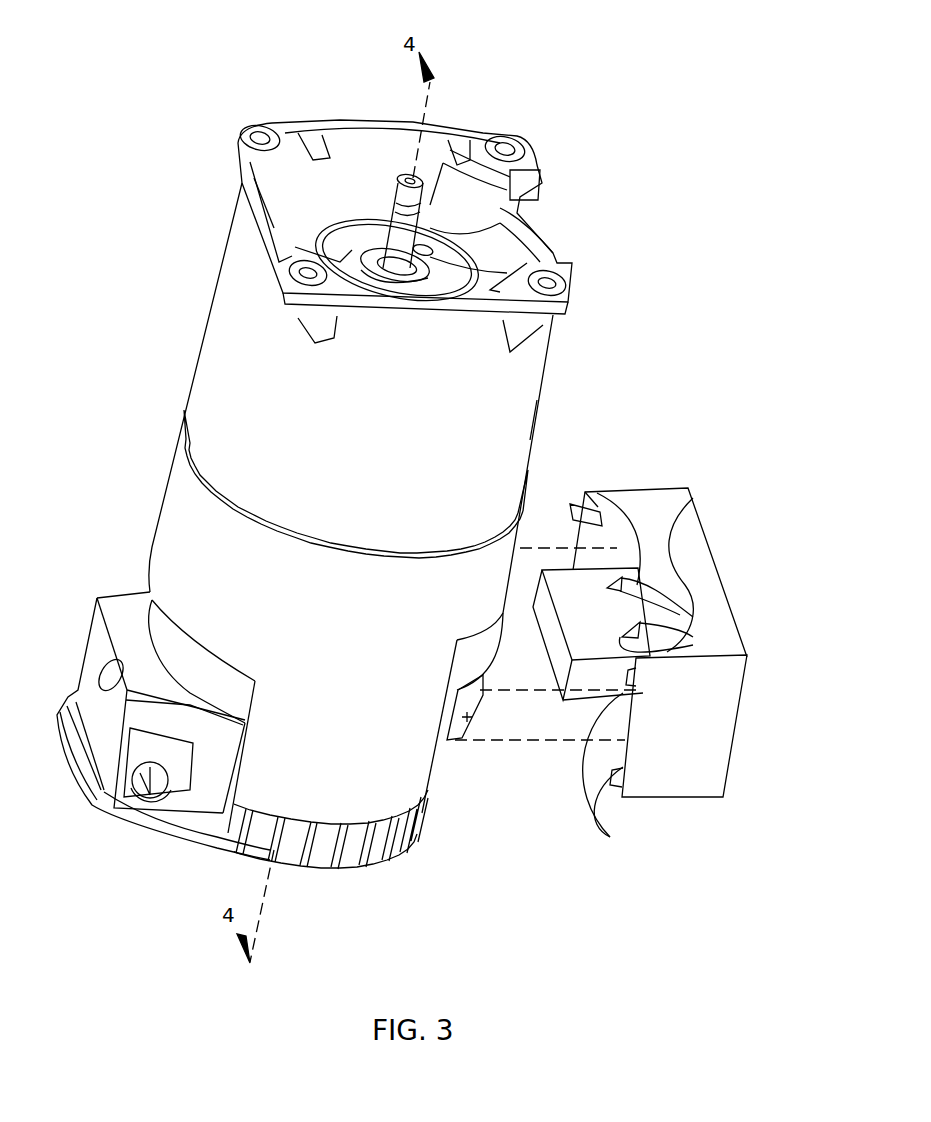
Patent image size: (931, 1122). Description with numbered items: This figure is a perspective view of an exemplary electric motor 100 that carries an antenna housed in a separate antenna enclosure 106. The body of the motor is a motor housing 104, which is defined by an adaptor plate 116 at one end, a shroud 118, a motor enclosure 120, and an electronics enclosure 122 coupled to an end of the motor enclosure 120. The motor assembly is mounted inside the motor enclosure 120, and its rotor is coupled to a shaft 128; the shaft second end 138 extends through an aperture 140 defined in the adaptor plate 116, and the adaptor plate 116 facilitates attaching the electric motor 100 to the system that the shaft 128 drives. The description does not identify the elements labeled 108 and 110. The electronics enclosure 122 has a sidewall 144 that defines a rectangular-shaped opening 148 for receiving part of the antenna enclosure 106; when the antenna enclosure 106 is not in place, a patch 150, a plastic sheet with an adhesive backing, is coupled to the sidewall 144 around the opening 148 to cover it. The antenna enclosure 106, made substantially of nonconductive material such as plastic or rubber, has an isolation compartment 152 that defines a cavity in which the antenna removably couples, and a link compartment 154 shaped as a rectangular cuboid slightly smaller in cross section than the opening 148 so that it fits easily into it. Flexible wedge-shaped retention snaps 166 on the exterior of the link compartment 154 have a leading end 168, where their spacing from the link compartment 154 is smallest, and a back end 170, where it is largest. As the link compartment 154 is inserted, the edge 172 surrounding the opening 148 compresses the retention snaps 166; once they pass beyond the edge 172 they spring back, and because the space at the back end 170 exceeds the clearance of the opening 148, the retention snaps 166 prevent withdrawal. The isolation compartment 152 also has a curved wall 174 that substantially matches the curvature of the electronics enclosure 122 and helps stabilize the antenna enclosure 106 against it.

The electric motor 100 is at (192, 136).
The motor housing 104 is at (556, 365).
The antenna enclosure 106 is at (673, 470).
The mounting hole 108 is at (284, 132).
The cooling fins 110 is at (343, 870).
The adaptor plate 116 is at (352, 150).
The shroud 118 is at (189, 427).
The motor enclosure 120 is at (520, 418).
The electronics enclosure 122 is at (450, 800).
The shaft 128 is at (540, 188).
The shaft second end 138 is at (427, 203).
The aperture 140 is at (500, 240).
The sidewall 144 is at (163, 537).
The opening 148 is at (467, 717).
The patch 150 is at (483, 703).
The isolation compartment 152 is at (712, 568).
The link compartment 154 is at (690, 500).
The retention snaps 166 is at (680, 600).
The leading end 168 is at (660, 652).
The back end 170 is at (693, 618).
The edge 172 is at (683, 562).
The curved wall 174 is at (597, 492).